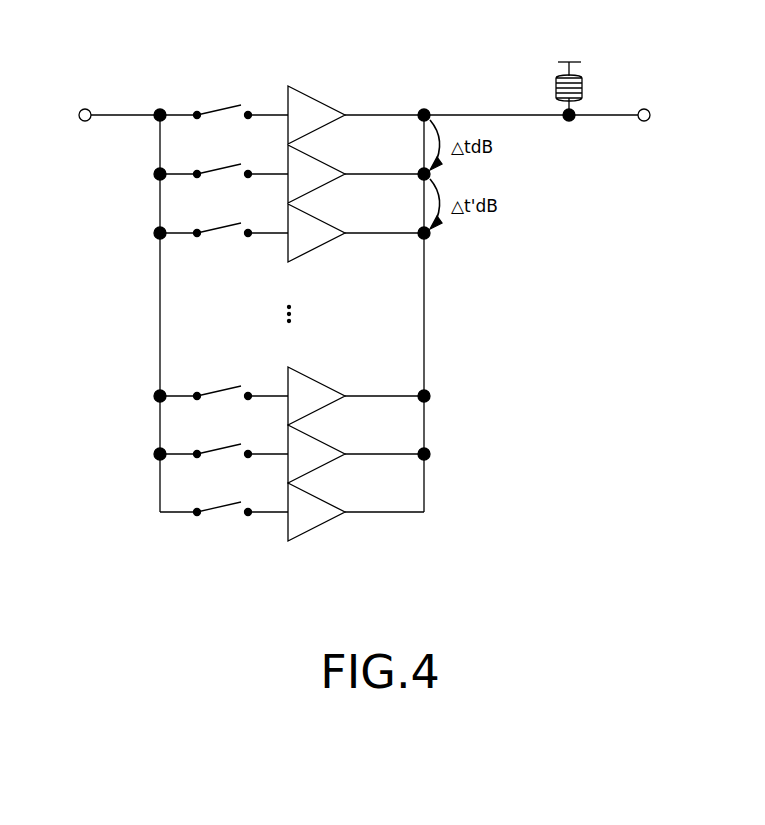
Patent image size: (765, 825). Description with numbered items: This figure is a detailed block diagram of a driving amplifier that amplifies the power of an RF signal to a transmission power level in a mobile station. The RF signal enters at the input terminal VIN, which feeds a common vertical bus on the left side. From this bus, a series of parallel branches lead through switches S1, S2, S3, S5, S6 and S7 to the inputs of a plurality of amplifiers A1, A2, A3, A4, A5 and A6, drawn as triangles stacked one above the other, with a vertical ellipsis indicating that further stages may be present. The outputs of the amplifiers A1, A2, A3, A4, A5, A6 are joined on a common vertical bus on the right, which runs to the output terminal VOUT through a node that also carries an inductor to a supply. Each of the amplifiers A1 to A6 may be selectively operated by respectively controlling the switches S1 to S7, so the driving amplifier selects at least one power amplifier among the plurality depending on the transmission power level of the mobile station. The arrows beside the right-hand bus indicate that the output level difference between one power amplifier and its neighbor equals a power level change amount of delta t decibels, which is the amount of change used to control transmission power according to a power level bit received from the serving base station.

The input terminal VIN is at (101, 116).
The output terminal VOUT is at (560, 94).
The switch S1 is at (224, 103).
The switch S2 is at (224, 162).
The switch S3 is at (224, 221).
The switch S5 is at (224, 384).
The switch S6 is at (224, 442).
The switch S7 is at (224, 500).
The amplifier A1 is at (356, 115).
The amplifier A2 is at (356, 174).
The amplifier A3 is at (356, 233).
The amplifier A4 is at (356, 396).
The amplifier A5 is at (356, 454).
The amplifier A6 is at (356, 512).